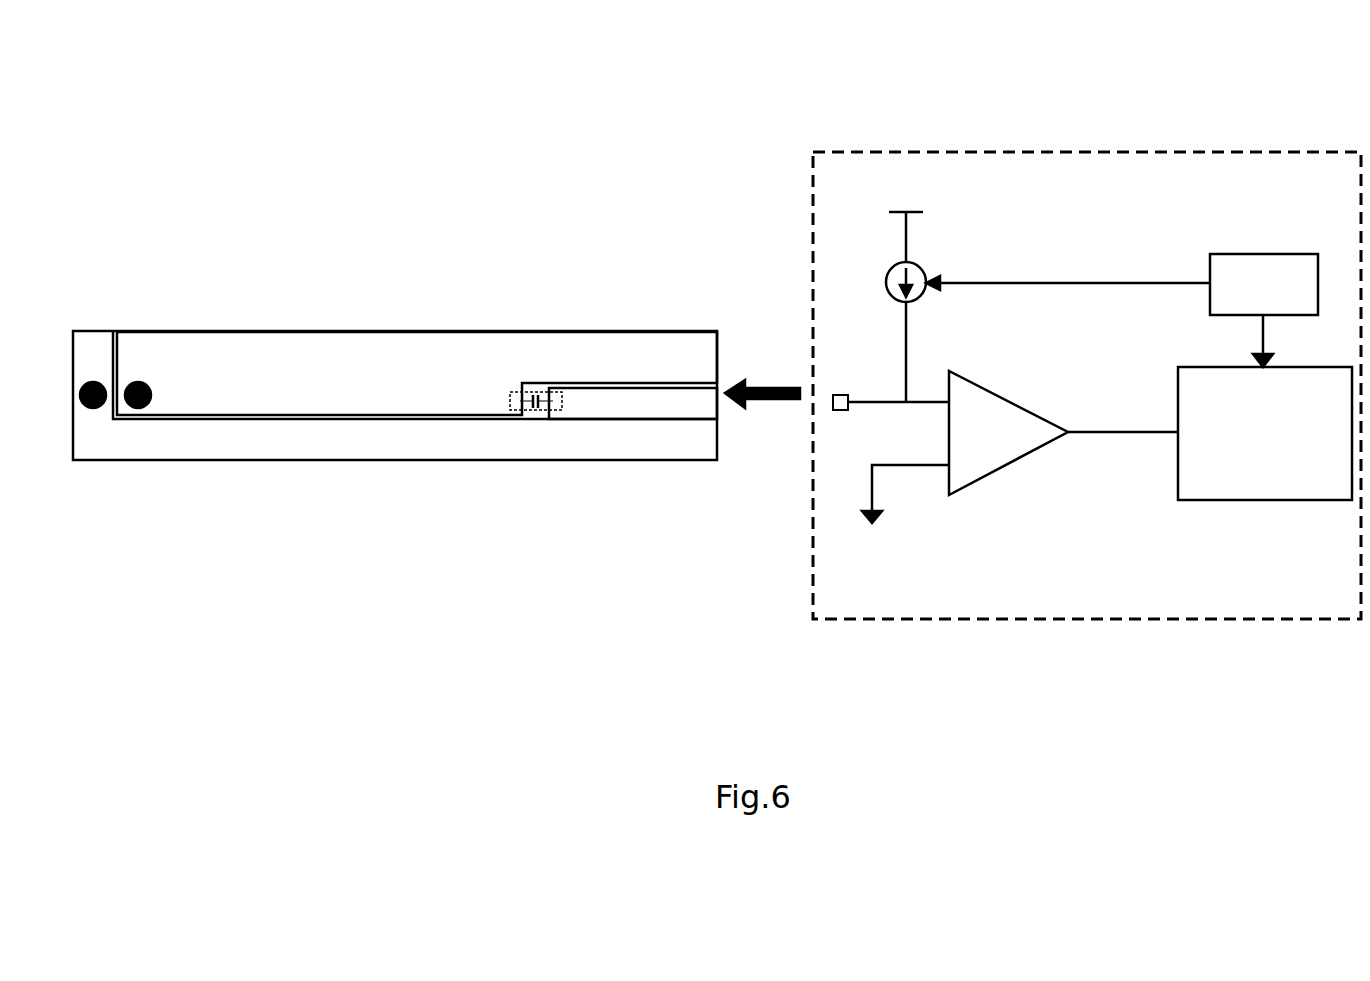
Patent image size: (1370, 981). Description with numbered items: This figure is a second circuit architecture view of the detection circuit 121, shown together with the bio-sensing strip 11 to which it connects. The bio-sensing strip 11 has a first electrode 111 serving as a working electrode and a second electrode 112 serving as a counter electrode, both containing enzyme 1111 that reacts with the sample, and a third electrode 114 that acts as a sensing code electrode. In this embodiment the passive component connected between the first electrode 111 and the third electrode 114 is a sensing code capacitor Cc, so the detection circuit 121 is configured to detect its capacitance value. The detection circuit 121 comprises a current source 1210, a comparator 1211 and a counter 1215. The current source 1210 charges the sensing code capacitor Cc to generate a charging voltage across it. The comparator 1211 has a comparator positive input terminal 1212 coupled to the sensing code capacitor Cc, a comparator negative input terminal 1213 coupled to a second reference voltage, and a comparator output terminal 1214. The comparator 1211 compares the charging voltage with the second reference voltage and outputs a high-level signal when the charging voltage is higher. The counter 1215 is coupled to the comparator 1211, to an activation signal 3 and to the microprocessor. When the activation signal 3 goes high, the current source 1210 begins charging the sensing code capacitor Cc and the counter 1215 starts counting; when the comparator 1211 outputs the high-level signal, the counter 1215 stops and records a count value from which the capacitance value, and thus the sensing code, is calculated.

The bio-sensing strip 11 is at (478, 321).
The first electrode 111 is at (255, 348).
The second electrode 112 is at (388, 450).
The enzyme 1111 is at (146, 405).
The third electrode 114 is at (695, 407).
The sensing code capacitor Cc is at (545, 407).
The detection circuit 121 is at (1180, 137).
The current source 1210 is at (918, 268).
The comparator positive input terminal 1212 is at (935, 400).
The comparator 1211 is at (1012, 462).
The comparator negative input terminal 1213 is at (917, 467).
The comparator output terminal 1214 is at (1082, 433).
The counter 1215 is at (1205, 502).
The activation signal 3 is at (1233, 252).